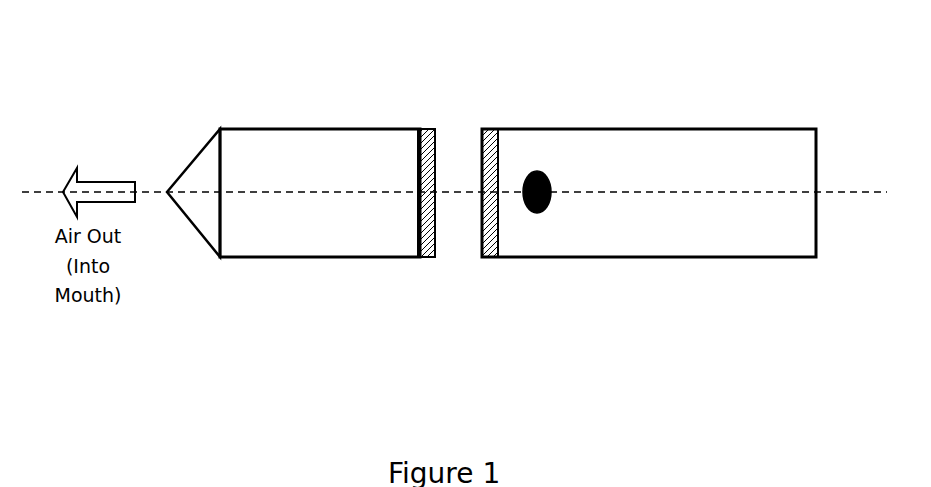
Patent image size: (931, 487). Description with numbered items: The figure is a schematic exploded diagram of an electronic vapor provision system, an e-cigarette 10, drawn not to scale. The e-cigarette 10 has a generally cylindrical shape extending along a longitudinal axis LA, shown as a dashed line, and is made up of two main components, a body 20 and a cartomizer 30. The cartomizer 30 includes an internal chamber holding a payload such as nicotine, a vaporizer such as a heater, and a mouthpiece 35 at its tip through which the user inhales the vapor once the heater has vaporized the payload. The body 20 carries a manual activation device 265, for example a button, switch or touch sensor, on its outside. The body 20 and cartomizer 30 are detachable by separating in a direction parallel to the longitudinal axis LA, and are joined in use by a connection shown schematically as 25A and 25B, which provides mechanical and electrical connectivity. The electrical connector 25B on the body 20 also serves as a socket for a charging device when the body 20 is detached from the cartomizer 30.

The e-cigarette 10 is at (204, 362).
The body 20 is at (672, 237).
The connection 25A is at (383, 239).
The electrical connector 25B is at (640, 130).
The cartomizer 30 is at (319, 156).
The mouthpiece 35 is at (156, 147).
The manual activation device 265 is at (589, 269).
The longitudinal axis LA is at (456, 178).